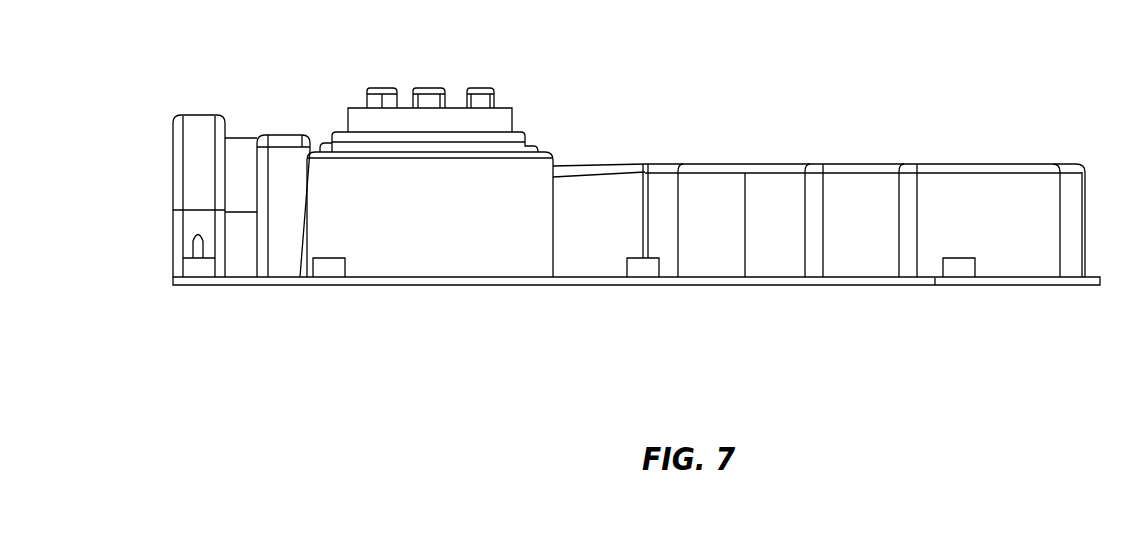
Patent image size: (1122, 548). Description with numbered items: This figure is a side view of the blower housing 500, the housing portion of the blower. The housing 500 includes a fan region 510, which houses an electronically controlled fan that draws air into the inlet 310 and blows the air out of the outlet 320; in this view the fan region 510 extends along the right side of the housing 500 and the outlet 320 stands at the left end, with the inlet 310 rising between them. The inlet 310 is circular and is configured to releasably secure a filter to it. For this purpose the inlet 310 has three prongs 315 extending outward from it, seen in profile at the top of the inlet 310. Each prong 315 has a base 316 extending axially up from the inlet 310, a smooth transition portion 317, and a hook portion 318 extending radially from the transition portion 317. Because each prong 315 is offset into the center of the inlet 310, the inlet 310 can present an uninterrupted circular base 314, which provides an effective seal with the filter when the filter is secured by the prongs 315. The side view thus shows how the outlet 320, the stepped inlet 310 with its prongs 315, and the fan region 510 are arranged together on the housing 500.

The blower housing 500 is at (780, 285).
The fan region 510 is at (887, 238).
The inlet 310 is at (424, 148).
The circular base 314 is at (424, 115).
The prong 315 is at (387, 100).
The base 316 is at (463, 100).
The transition portion 317 is at (383, 88).
The hook portion 318 is at (495, 107).
The outlet 320 is at (172, 184).